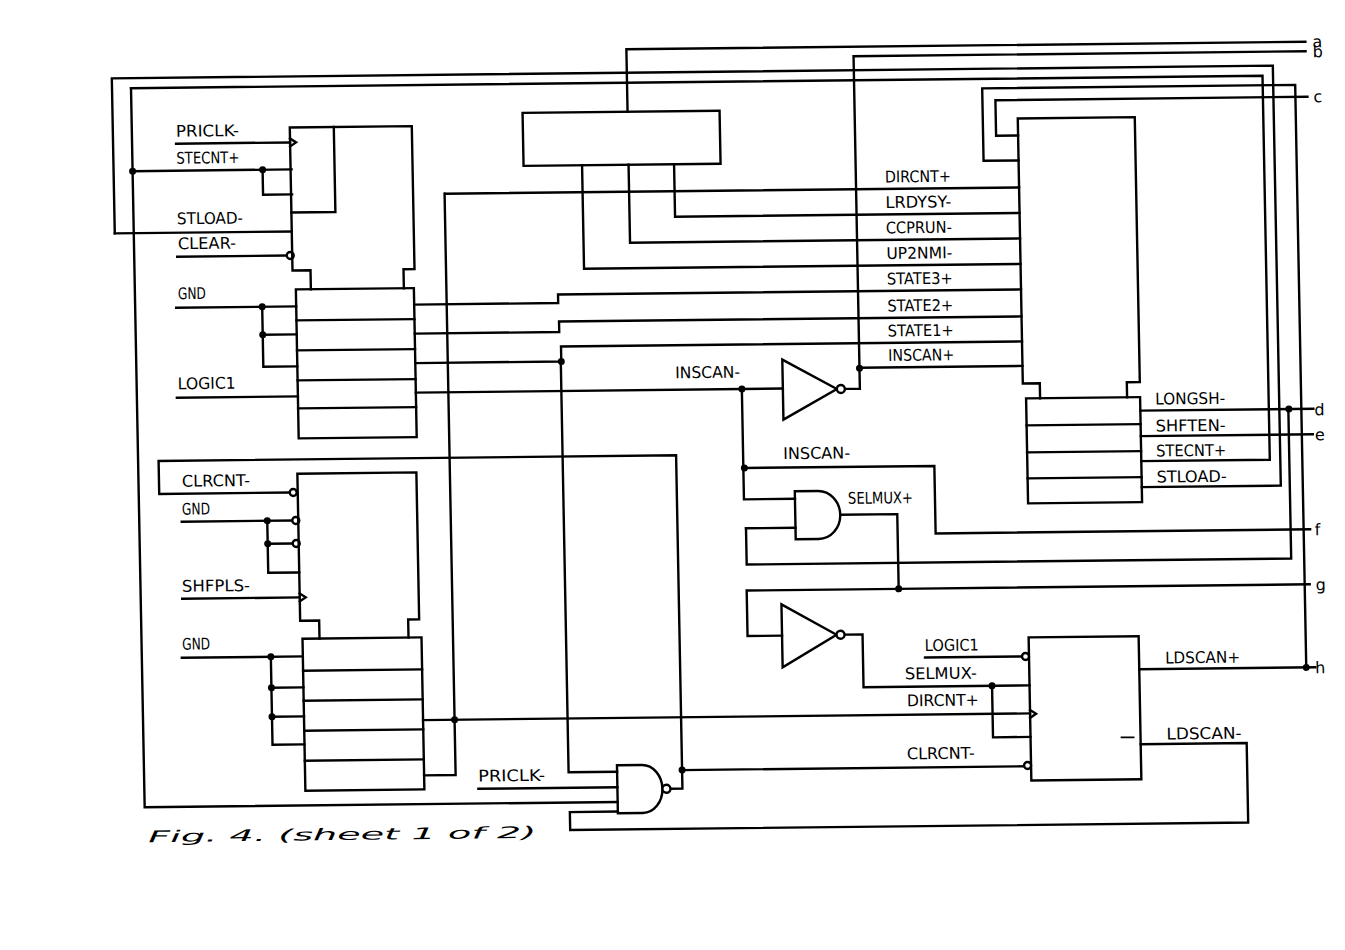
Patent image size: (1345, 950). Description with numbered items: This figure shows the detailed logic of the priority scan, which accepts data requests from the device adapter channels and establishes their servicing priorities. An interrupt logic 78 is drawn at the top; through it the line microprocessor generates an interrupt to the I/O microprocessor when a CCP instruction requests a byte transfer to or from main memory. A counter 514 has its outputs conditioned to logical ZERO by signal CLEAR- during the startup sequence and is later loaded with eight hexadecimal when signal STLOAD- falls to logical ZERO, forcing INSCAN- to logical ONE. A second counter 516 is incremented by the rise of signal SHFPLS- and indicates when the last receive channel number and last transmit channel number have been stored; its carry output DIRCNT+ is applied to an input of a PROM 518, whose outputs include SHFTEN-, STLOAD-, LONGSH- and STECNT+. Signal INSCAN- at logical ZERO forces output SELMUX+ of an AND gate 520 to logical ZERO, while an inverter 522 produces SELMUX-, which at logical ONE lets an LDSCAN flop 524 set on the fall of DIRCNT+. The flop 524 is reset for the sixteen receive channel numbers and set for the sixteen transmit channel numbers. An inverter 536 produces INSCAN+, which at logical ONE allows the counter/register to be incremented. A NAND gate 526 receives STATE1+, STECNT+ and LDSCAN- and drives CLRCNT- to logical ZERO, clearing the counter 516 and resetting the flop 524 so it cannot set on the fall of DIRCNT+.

The interrupt logic 78 is at (529, 122).
The counter 514 is at (391, 123).
The counter 516 is at (418, 526).
The PROM 518 is at (1143, 165).
The AND gate 520 is at (829, 533).
The inverter 522 is at (817, 621).
The LDSCAN flop 524 is at (1110, 641).
The NAND gate 526 is at (622, 763).
The inverter 536 is at (818, 408).